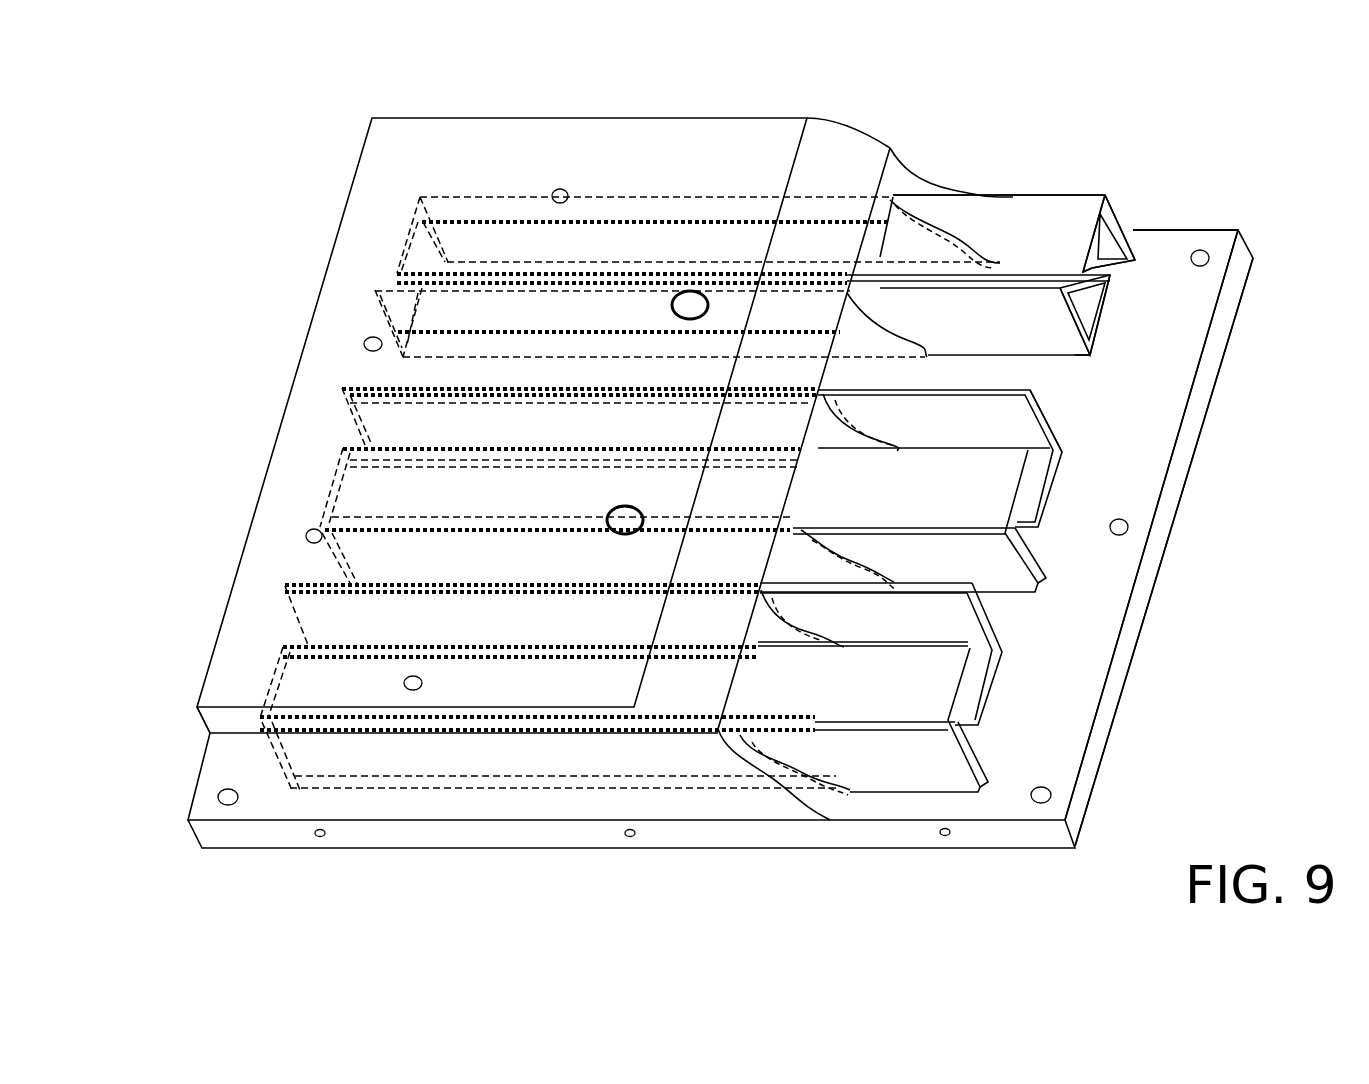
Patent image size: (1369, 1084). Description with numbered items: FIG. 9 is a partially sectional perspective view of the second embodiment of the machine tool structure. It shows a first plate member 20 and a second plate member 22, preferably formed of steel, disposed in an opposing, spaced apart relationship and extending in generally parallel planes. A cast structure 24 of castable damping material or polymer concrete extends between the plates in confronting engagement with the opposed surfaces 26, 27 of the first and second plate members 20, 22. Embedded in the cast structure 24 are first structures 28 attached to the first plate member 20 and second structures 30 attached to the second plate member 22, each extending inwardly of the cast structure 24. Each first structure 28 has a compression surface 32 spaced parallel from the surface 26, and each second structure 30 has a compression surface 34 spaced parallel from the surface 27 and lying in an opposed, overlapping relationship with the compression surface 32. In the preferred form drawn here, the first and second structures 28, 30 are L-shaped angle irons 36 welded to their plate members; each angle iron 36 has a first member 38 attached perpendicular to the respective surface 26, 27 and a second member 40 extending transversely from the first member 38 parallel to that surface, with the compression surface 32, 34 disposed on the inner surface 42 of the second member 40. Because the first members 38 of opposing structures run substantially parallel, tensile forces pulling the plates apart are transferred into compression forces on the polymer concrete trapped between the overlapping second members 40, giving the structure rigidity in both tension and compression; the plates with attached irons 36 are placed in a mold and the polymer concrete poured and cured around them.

The first plate member 20 is at (235, 658).
The second plate member 22 is at (1172, 420).
The cast structure 24 is at (250, 773).
The opposed surface of first plate member 26 is at (233, 737).
The opposed surface of second plate member 27 is at (1119, 475).
The first structure 28 is at (1040, 340).
The second structure 30 is at (1113, 228).
The compression surface of first structure 32 is at (1117, 280).
The compression surface of second structure 34 is at (1238, 230).
The L-shaped angle iron 36 is at (1015, 225).
The first member 38 is at (1123, 222).
The second member 40 is at (1053, 228).
The inner surface 42 is at (1133, 260).